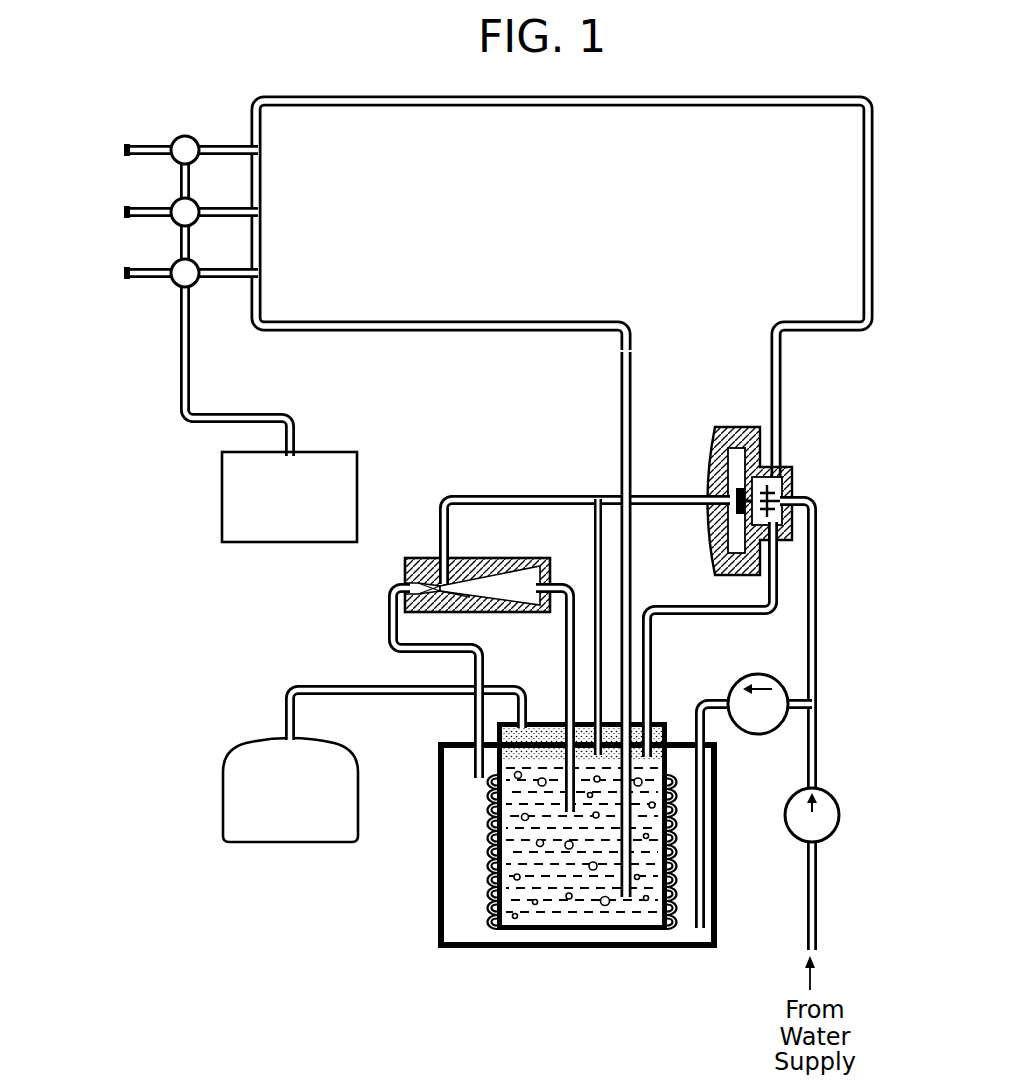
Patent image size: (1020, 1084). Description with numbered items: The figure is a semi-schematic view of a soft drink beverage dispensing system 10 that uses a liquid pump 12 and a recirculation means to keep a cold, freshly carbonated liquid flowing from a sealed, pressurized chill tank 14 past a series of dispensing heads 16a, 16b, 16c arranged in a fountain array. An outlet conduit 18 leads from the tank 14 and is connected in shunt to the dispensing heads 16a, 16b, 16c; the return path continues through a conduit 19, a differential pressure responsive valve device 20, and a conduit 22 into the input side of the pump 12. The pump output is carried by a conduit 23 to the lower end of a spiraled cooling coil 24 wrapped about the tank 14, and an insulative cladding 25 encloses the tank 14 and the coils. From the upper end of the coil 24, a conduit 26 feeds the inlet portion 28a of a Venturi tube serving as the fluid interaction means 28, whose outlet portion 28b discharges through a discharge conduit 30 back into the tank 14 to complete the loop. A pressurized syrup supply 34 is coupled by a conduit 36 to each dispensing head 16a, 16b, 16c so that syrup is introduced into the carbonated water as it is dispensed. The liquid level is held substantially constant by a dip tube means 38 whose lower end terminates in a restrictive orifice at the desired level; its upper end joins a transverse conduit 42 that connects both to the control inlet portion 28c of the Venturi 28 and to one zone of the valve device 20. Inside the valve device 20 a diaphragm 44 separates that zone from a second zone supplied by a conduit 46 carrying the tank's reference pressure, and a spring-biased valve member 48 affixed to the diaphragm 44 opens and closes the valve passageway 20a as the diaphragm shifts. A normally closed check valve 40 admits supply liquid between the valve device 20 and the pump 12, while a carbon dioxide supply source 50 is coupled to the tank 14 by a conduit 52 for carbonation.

The soft drink beverage dispensing system 10 is at (694, 84).
The liquid pump 12 is at (756, 673).
The chill tank 14 is at (546, 714).
The dispensing head 16a is at (173, 140).
The dispensing head 16b is at (173, 203).
The dispensing head 16c is at (173, 264).
The outlet conduit 18 is at (620, 413).
The conduit 19 is at (369, 96).
The differential pressure responsive valve device 20 is at (764, 478).
The valve passageway 20a is at (794, 476).
The conduit 22 is at (796, 712).
The conduit 23 is at (719, 700).
The cooling coil 24 is at (478, 862).
The insulative cladding 25 is at (720, 888).
The conduit 26 is at (389, 641).
The fluid interaction means 28 is at (444, 575).
The inlet portion 28a is at (404, 578).
The outlet portion 28b is at (498, 578).
The control inlet portion 28c is at (456, 610).
The discharge conduit 30 is at (566, 651).
The pressurized syrup supply 34 is at (322, 452).
The conduit 36 is at (192, 366).
The dip tube means 38 is at (596, 550).
The check valve 40 is at (837, 800).
The transverse conduit 42 is at (546, 494).
The diaphragm 44 is at (717, 545).
The conduit 46 is at (706, 614).
The valve member 48 is at (787, 542).
The carbon dioxide supply source 50 is at (254, 742).
The conduit 52 is at (331, 688).